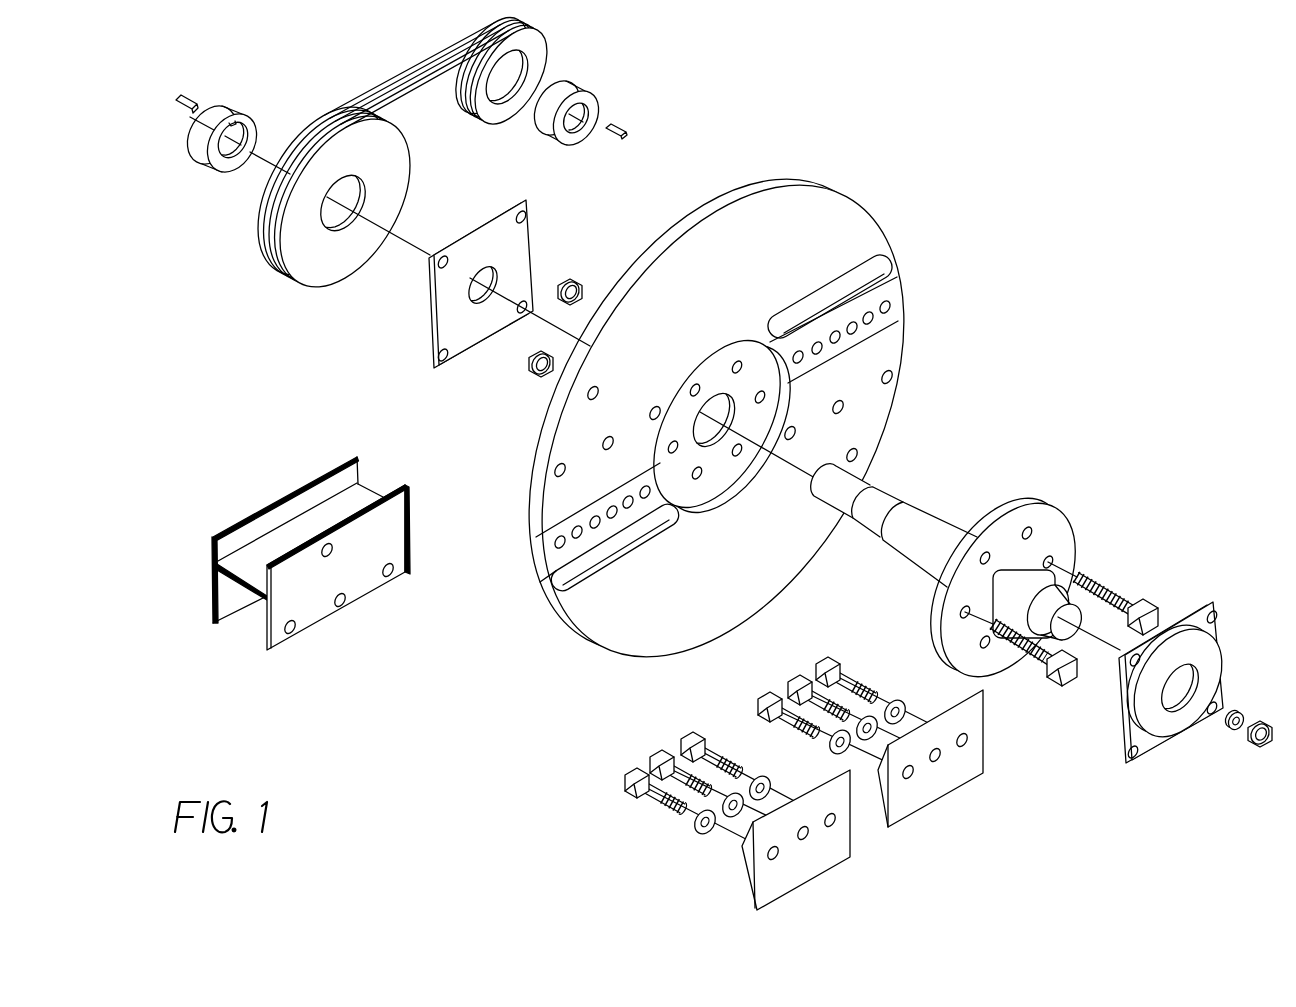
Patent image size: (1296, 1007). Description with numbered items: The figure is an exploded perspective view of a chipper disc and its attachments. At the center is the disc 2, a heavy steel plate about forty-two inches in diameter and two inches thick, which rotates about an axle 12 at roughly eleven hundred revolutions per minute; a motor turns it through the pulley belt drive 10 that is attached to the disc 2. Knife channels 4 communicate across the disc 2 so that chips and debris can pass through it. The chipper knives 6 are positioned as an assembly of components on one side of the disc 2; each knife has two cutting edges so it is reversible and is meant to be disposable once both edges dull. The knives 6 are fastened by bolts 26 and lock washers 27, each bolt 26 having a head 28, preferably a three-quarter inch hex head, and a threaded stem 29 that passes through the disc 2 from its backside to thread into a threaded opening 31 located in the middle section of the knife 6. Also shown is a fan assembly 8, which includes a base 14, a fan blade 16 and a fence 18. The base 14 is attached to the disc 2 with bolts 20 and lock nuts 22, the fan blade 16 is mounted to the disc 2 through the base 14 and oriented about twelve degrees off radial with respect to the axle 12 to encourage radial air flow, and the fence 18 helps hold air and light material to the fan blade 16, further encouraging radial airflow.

The disc 2 is at (868, 414).
The knife channels 4 is at (598, 557).
The chipper knives 6 is at (770, 842).
The fan assemblies 8 is at (330, 580).
The pulley belt drive 10 is at (369, 89).
The axle 12 is at (1050, 528).
The base 14 is at (357, 585).
The fan blade 16 is at (243, 592).
The fence 18 is at (277, 500).
The bolts 20 is at (1070, 690).
The lock nuts 22 is at (528, 369).
The bolts 26 is at (698, 801).
The lock washers 27 is at (694, 830).
The head 28 is at (625, 776).
The threaded stem 29 is at (683, 812).
The threaded opening 31 is at (808, 838).